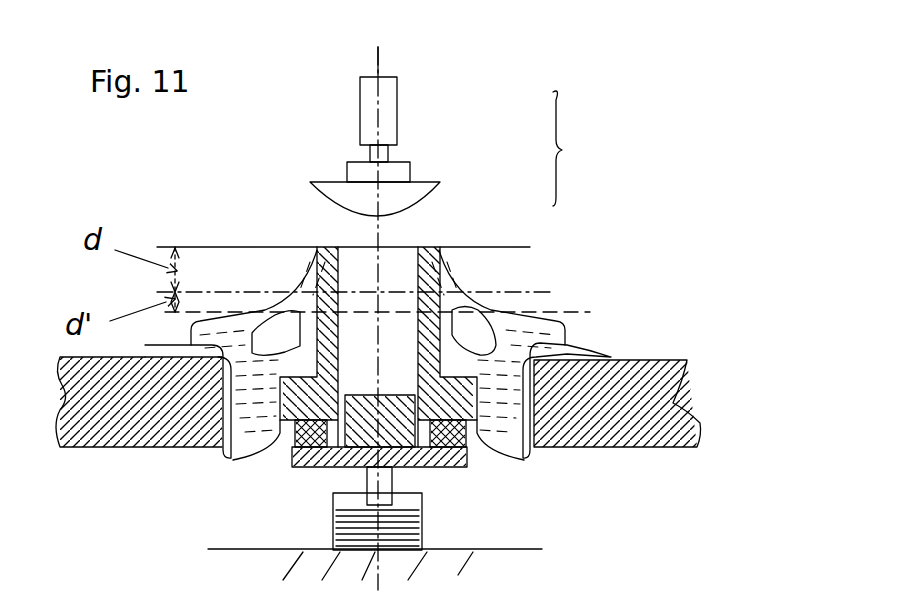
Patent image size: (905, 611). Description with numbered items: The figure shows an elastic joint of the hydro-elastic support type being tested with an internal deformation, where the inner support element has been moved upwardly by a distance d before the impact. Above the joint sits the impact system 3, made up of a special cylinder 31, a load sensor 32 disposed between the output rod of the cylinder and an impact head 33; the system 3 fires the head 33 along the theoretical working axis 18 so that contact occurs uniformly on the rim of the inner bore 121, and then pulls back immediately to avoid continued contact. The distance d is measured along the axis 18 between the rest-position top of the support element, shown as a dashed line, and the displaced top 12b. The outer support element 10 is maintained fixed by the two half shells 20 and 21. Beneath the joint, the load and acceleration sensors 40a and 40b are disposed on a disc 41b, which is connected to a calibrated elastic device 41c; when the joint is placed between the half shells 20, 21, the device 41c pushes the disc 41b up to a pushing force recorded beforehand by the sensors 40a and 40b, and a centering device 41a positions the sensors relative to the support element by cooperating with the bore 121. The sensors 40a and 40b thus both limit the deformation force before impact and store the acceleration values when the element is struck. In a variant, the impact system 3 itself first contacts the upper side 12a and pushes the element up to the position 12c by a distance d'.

The impact system assembly 3 is at (584, 150).
The theoretical working axis 18 is at (387, 60).
The special cylinder 31 is at (402, 104).
The load sensor 32 is at (414, 165).
The impact head 33 is at (445, 200).
The top of the inner support element 12b is at (525, 247).
The upper side of the support element 12a is at (548, 290).
The displaced position of the support element 12c is at (599, 310).
The inner bore 121 is at (416, 352).
The half shell 20 is at (118, 454).
The half shell 21 is at (604, 451).
The outer support element 10 is at (547, 457).
The load and acceleration sensor 40a is at (293, 447).
The load and acceleration sensor 40b is at (470, 444).
The centering device 41a is at (363, 424).
The disc 41b is at (432, 468).
The calibrated elastic device 41c is at (332, 510).